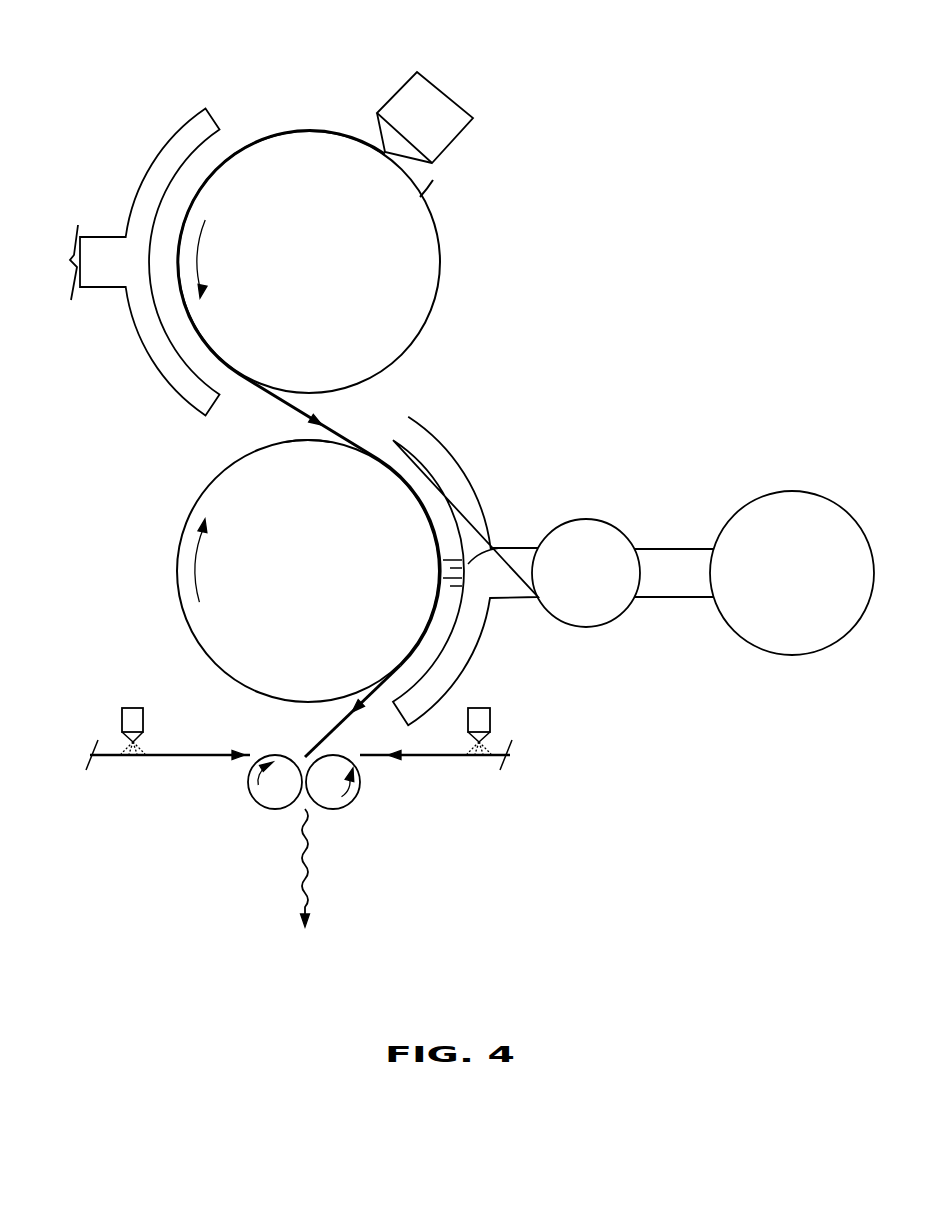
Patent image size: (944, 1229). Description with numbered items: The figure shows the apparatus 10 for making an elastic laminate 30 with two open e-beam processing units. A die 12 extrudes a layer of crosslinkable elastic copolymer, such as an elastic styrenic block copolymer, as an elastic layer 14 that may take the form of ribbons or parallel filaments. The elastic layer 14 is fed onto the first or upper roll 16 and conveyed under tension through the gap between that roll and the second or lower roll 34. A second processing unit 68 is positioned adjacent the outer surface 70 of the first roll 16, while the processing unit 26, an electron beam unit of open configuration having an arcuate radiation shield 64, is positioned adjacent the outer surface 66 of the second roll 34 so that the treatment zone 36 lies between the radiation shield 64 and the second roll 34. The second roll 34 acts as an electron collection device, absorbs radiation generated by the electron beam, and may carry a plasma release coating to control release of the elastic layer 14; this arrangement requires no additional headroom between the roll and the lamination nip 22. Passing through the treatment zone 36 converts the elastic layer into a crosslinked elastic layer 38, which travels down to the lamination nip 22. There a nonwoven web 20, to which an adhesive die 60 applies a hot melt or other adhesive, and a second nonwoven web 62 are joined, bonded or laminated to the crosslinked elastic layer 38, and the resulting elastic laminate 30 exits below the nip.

The apparatus 10 is at (527, 273).
The die 12 is at (398, 91).
The elastic layer 14 is at (382, 148).
The first roll 16 is at (440, 249).
The outer surface 70 is at (427, 197).
The second processing unit 68 is at (173, 133).
The outer surface 66 is at (293, 440).
The arcuate radiation shield 64 is at (433, 457).
The second roll 34 is at (203, 489).
The processing unit 26 is at (680, 503).
The treatment zone 36 is at (497, 546).
The crosslinked elastic layer 38 is at (343, 729).
The second nonwoven web 62 is at (182, 758).
The nonwoven web 20 is at (425, 758).
The adhesive die 60 is at (492, 722).
The lamination nip 22 is at (265, 818).
The elastic laminate 30 is at (310, 885).